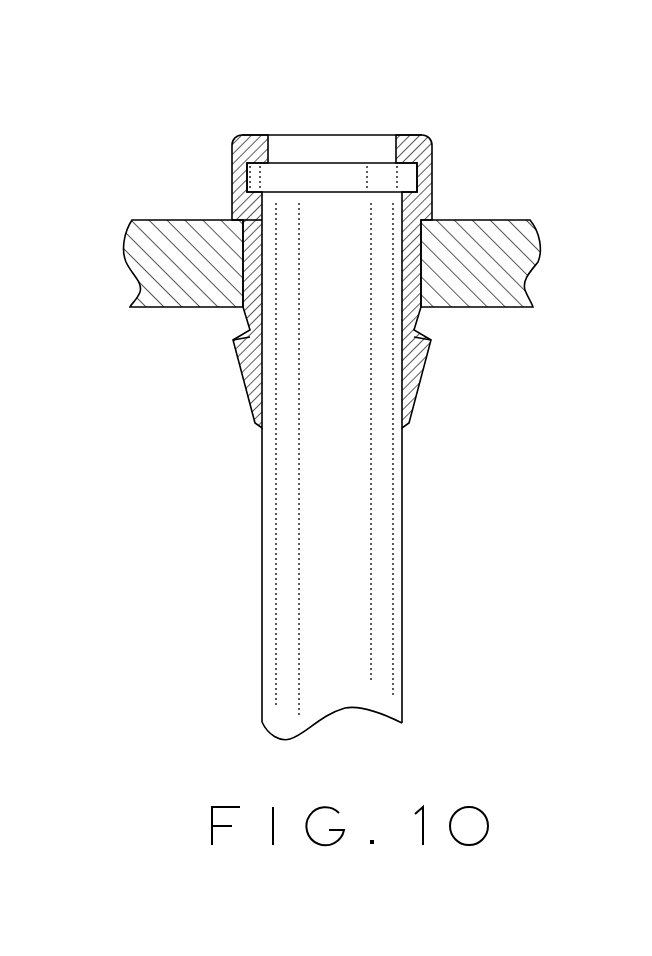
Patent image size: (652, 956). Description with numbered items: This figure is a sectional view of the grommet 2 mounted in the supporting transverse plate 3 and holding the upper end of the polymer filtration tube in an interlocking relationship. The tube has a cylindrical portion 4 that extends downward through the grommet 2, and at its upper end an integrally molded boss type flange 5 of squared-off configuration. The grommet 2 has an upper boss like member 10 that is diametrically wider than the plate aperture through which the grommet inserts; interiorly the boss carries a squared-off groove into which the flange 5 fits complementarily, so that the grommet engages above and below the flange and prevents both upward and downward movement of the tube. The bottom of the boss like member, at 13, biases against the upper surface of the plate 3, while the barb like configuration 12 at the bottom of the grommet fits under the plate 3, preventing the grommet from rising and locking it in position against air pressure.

The grommet 2 is at (344, 390).
The transverse plate 3 is at (530, 219).
The cylindrical portion 4 is at (403, 617).
The boss type flange 5 is at (345, 47).
The boss like member 10 is at (231, 153).
The barb like configuration 12 is at (423, 376).
The bottom of the boss like flange 13 is at (236, 231).